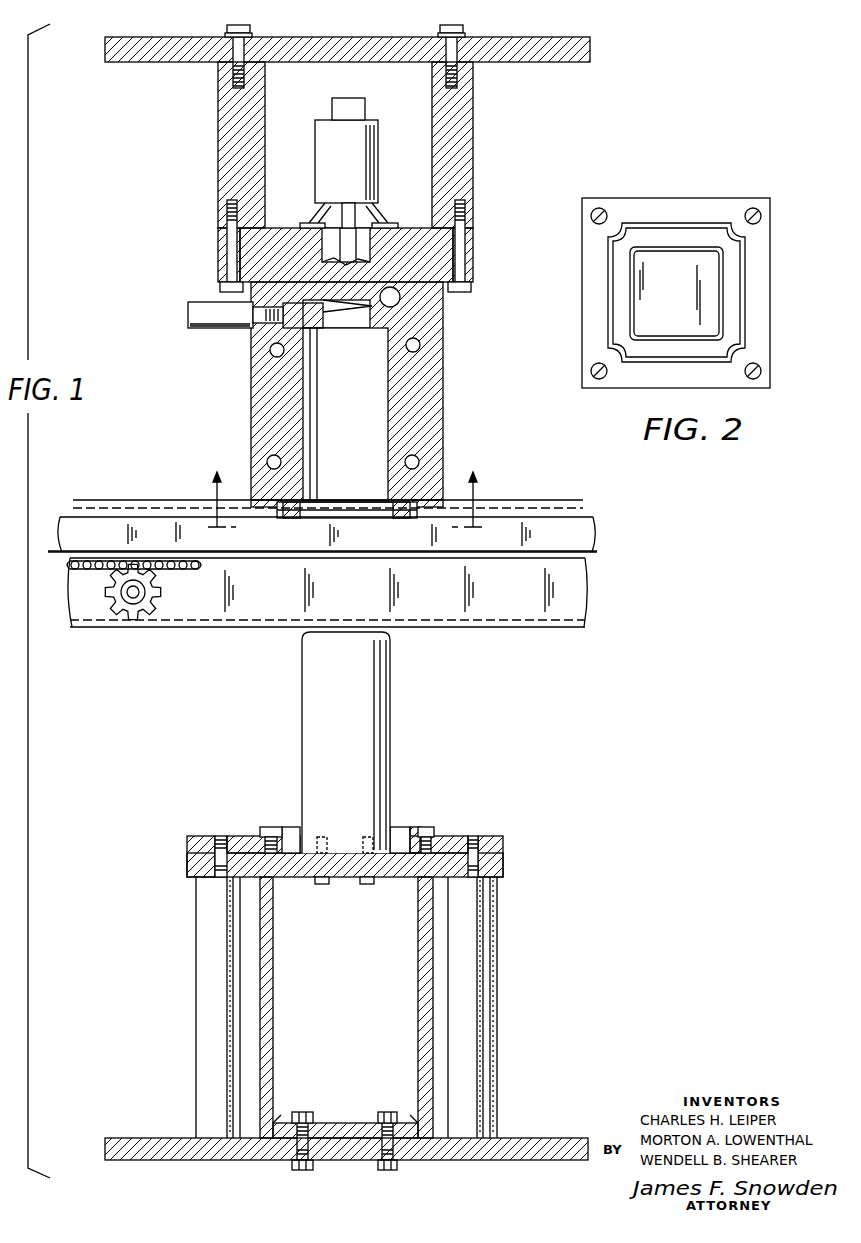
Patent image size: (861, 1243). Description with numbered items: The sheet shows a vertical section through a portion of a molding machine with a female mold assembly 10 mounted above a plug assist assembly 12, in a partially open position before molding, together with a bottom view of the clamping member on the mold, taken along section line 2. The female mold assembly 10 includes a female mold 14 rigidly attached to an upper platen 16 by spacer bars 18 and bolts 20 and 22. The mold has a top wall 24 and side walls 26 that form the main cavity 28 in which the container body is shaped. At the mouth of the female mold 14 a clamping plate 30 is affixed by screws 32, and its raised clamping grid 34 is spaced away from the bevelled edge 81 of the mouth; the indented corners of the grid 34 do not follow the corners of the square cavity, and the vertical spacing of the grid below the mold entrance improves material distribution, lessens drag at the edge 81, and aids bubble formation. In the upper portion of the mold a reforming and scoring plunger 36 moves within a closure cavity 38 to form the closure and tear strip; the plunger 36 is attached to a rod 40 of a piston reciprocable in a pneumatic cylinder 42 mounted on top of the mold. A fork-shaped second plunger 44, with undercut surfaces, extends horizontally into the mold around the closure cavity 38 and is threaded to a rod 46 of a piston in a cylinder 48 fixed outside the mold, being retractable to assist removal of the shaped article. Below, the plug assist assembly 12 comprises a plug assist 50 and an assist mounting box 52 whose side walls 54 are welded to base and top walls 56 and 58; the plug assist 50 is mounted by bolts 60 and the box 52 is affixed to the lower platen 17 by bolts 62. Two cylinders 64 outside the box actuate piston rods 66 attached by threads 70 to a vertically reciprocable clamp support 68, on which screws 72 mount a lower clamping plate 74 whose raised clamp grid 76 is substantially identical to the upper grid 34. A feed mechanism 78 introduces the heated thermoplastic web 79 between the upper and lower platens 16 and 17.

In FIG. 1, the female mold assembly 10 is at (194, 412).
In FIG. 1, the plug assist assembly 12 is at (488, 766).
In FIG. 1, the female mold 14 is at (360, 367).
In FIG. 1, the upper platen 16 is at (347, 37).
In FIG. 1, the lower platen 17 is at (346, 1131).
In FIG. 1, the spacer bars 18 is at (364, 172).
In FIG. 1, the bolts 20 is at (336, 255).
In FIG. 1, the bolts 22 is at (356, 47).
In FIG. 1, the top wall 24 is at (379, 317).
In FIG. 1, the side walls 26 is at (326, 414).
In FIG. 1, the main cavity 28 is at (345, 400).
In FIG. 2, the main cavity 28 is at (670, 293).
In FIG. 1, the clamping plate 30 is at (347, 522).
In FIG. 2, the clamping plate 30 is at (676, 280).
In FIG. 1, the screws 32 is at (335, 511).
In FIG. 2, the screws 32 is at (679, 276).
In FIG. 1, the clamping grid 34 is at (347, 528).
In FIG. 2, the clamping grid 34 is at (647, 292).
In FIG. 1, the reforming and scoring plunger 36 is at (304, 215).
In FIG. 1, the closure cavity 38 is at (347, 317).
In FIG. 1, the rod 40 is at (379, 213).
In FIG. 1, the pneumatic cylinder 42 is at (329, 150).
In FIG. 1, the fork-shaped second plunger 44 is at (272, 339).
In FIG. 1, the rod 46 is at (247, 330).
In FIG. 1, the cylinder 48 is at (201, 322).
In FIG. 1, the plug assist 50 is at (359, 742).
In FIG. 1, the assist mounting box 52 is at (481, 975).
In FIG. 1, the side walls 54 is at (337, 1007).
In FIG. 1, the base wall 56 is at (345, 1115).
In FIG. 1, the top wall 58 is at (330, 878).
In FIG. 1, the bolts 60 is at (380, 873).
In FIG. 1, the bolts 62 is at (346, 1123).
In FIG. 1, the cylinders 64 is at (342, 1007).
In FIG. 1, the piston rods 66 is at (343, 856).
In FIG. 1, the clamp support 68 is at (340, 824).
In FIG. 1, the threads 70 is at (333, 839).
In FIG. 1, the screws 72 is at (275, 824).
In FIG. 1, the clamping plate 74 is at (428, 823).
In FIG. 1, the clamp grid 76 is at (405, 823).
In FIG. 1, the feed mechanism 78 is at (152, 591).
In FIG. 1, the thermoplastic web 79 is at (134, 545).
In FIG. 1, the bevelled edge 81 is at (346, 487).
In FIG. 2, the bevelled edge 81 is at (715, 286).
In FIG. 1, the section line 2- 2 is at (345, 490).